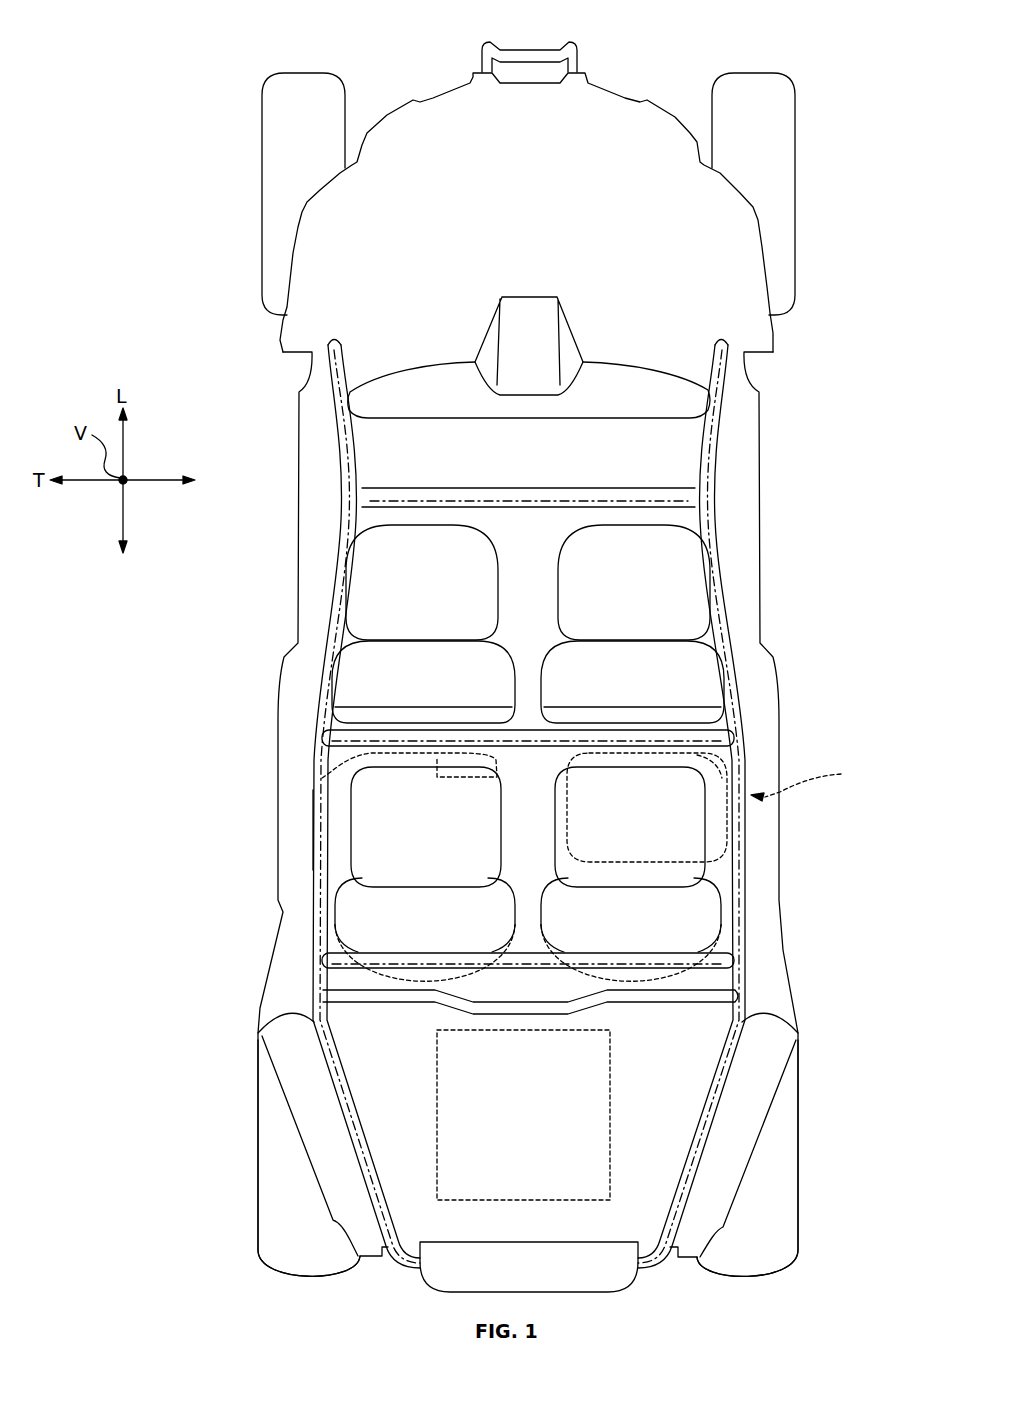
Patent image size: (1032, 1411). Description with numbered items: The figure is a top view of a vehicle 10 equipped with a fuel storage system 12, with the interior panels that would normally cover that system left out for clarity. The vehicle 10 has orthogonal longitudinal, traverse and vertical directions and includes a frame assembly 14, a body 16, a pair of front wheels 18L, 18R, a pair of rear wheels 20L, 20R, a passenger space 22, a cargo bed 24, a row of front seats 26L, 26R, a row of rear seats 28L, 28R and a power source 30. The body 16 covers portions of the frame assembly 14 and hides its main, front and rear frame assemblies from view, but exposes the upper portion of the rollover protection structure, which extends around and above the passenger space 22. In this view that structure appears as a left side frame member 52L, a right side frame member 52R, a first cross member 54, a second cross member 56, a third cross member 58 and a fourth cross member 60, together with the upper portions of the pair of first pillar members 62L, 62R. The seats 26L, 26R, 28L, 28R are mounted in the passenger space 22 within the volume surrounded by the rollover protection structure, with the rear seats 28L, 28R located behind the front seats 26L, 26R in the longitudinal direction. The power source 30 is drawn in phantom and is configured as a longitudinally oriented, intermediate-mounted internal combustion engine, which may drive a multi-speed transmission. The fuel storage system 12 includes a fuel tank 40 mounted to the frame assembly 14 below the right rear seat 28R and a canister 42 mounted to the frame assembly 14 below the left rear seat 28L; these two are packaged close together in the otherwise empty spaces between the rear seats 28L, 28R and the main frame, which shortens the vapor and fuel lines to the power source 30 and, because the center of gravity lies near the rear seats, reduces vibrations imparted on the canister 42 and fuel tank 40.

The vehicle 10 is at (675, 63).
The fuel storage system 12 is at (808, 783).
The frame assembly 14 is at (230, 827).
The body 16 is at (763, 455).
The front wheel 18L is at (262, 130).
The front wheel 18R is at (797, 162).
The rear wheel 20L is at (258, 1153).
The rear wheel 20R is at (800, 1153).
The passenger space 22 is at (545, 624).
The cargo bed 24 is at (610, 1232).
The front seat 26L is at (362, 612).
The front seat 26R is at (702, 686).
The rear seat 28L is at (352, 855).
The rear seat 28R is at (702, 912).
The power source 30 is at (608, 1078).
The fuel tank 40 is at (745, 786).
The canister 42 is at (322, 778).
The left side frame member 52L is at (258, 1030).
The right side frame member 52R is at (714, 499).
The first cross member 54 is at (531, 488).
The second cross member 56 is at (738, 738).
The third cross member 58 is at (735, 966).
The fourth cross member 60 is at (645, 1268).
The first pillar member 62L is at (301, 804).
The first pillar member 62R is at (737, 804).